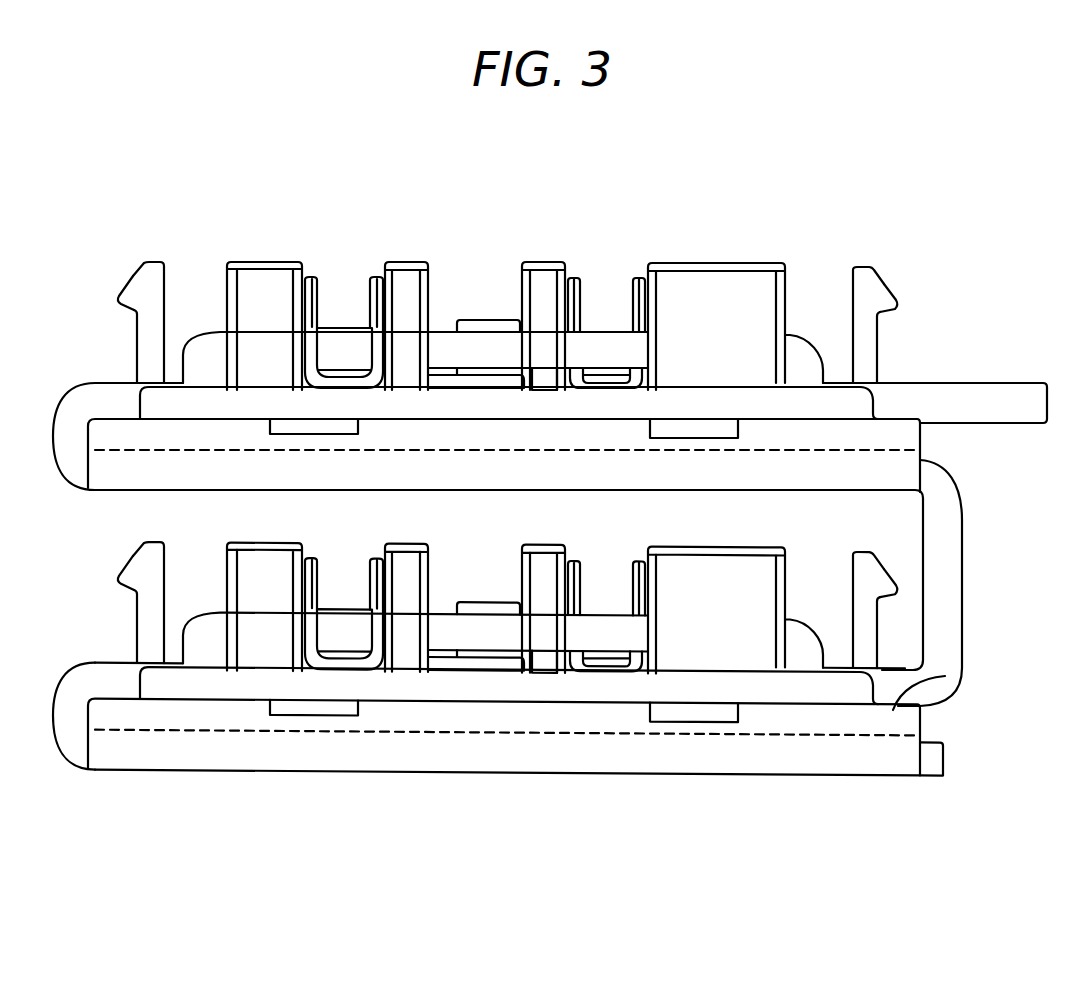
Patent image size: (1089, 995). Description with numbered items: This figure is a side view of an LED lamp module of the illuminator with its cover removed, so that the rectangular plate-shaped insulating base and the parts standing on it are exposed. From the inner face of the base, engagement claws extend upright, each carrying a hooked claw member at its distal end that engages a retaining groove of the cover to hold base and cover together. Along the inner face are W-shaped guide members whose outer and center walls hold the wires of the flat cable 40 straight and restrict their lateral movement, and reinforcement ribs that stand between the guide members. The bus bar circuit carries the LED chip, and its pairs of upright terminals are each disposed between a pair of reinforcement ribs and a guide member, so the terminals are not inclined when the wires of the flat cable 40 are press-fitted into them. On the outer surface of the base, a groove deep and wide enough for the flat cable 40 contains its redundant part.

The flat cable 40 is at (963, 554).